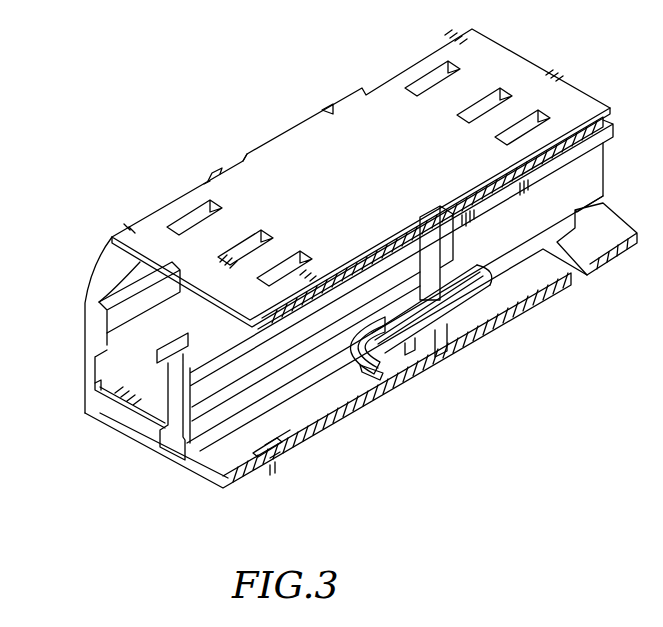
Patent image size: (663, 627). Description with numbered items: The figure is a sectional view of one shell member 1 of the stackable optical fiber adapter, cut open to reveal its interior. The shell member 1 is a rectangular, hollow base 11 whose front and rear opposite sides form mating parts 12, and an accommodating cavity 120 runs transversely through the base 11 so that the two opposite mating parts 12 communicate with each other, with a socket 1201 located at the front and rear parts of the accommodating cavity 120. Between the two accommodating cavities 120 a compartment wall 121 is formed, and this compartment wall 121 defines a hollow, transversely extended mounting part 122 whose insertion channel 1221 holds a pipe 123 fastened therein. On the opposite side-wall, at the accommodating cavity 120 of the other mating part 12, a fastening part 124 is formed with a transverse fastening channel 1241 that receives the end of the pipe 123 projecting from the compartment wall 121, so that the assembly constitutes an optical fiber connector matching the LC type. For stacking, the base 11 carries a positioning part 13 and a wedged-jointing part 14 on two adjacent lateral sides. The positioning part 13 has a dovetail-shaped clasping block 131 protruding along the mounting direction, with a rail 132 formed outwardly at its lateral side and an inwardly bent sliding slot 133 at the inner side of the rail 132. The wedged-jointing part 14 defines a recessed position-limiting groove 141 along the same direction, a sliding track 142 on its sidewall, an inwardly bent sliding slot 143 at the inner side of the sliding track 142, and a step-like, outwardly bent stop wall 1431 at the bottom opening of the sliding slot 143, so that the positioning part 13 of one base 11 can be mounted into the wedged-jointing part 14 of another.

The shell member 1 is at (292, 87).
The base 11 is at (297, 143).
The mating part 12 is at (92, 337).
The positioning part 13 is at (172, 137).
The clasping block 131 is at (240, 160).
The rail 132 is at (214, 175).
The sliding slot 133 is at (210, 181).
The wedged-jointing part 14 is at (318, 491).
The position-limiting groove 141 is at (283, 438).
The sliding track 142 is at (275, 455).
The sliding slot 143 is at (283, 457).
The stop wall 1431 is at (163, 377).
The accommodating cavity 120 is at (145, 362).
The socket 1201 is at (95, 387).
The compartment wall 121 is at (433, 353).
The mounting part 122 is at (490, 330).
The insertion channel 1221 is at (490, 292).
The pipe 123 is at (403, 353).
The fastening part 124 is at (383, 363).
The fastening channel 1241 is at (363, 377).